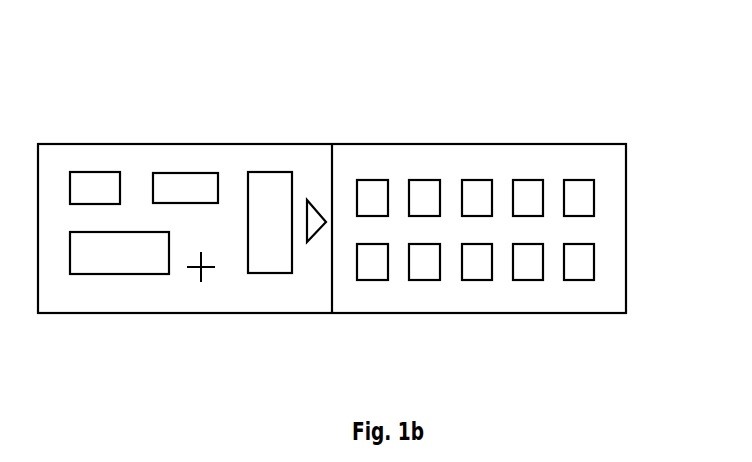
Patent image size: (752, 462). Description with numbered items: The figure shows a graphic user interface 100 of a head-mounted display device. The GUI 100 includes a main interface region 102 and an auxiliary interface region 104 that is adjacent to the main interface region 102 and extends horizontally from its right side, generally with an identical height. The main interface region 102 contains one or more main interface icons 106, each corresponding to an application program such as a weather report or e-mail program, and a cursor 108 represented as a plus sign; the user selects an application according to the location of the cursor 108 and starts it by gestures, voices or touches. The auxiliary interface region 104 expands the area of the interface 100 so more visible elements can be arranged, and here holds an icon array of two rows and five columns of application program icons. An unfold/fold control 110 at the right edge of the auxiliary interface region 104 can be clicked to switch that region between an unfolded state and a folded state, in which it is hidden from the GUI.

The graphic user interface 100 is at (482, 80).
The main interface region 102 is at (252, 144).
The auxiliary interface region 104 is at (562, 144).
The main interface icons 106 is at (95, 172).
The cursor 108 is at (192, 268).
The unfold/fold control 110 is at (320, 230).